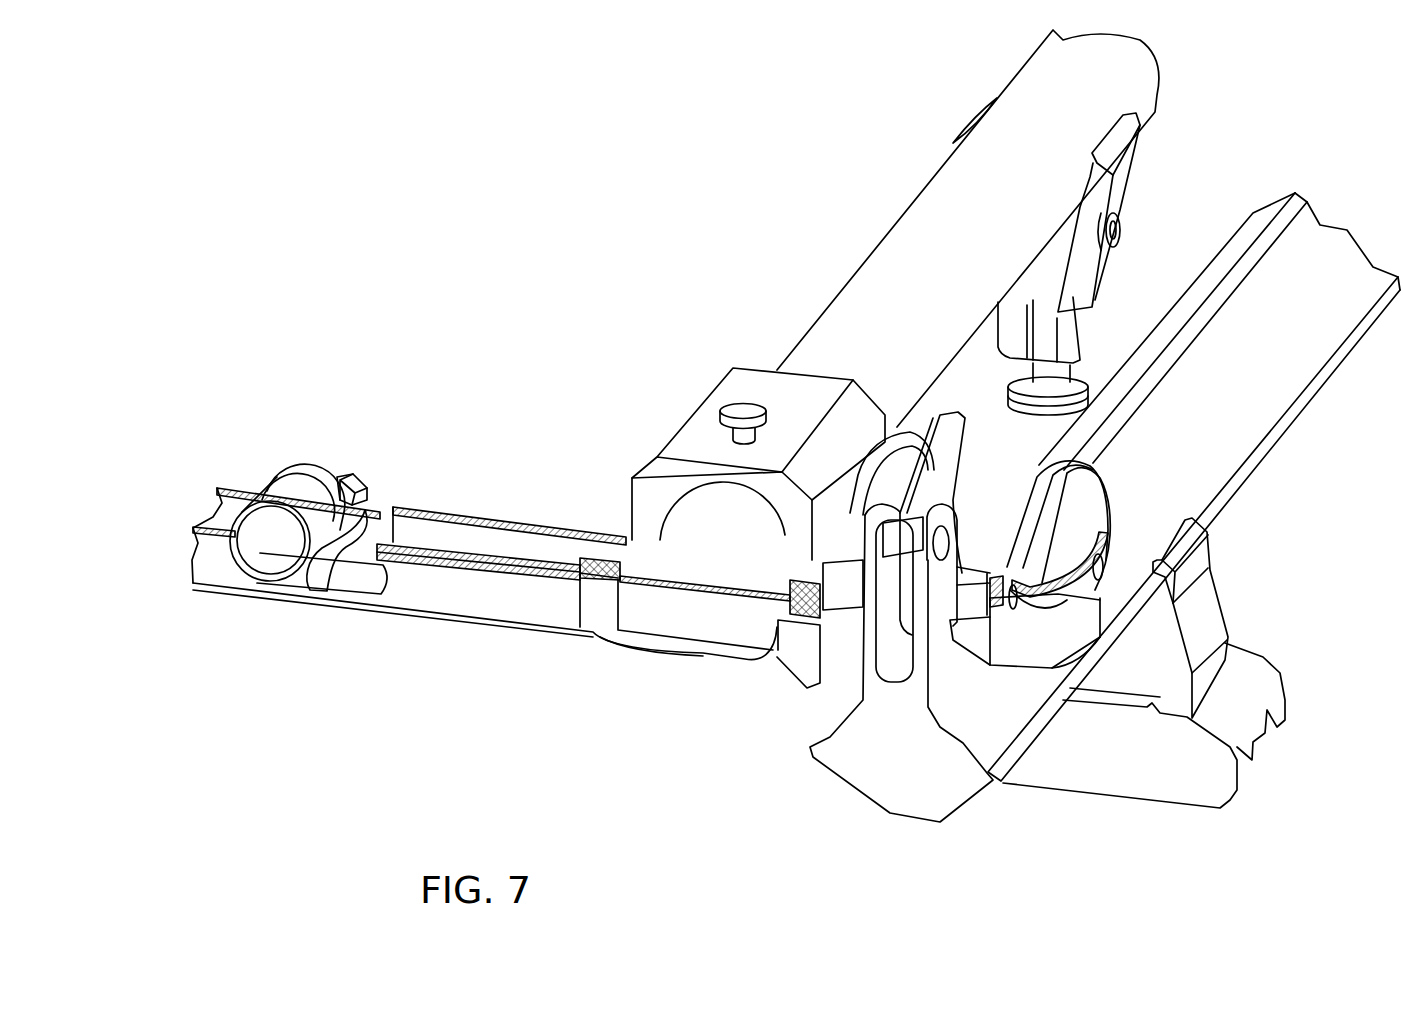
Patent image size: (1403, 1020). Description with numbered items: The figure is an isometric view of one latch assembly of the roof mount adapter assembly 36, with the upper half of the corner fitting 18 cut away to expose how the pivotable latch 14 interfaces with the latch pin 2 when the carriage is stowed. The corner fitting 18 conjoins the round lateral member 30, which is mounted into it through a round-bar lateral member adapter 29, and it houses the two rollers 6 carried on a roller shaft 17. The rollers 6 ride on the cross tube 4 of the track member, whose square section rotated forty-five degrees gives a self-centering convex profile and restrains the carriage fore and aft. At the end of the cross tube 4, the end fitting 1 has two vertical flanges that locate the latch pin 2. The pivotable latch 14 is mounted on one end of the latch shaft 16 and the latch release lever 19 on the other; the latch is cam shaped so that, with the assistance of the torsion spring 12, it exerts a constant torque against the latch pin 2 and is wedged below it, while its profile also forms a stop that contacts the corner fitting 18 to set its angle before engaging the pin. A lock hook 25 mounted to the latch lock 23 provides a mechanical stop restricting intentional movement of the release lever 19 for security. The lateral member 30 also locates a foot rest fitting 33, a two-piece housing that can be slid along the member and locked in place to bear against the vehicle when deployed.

The end fitting 1 is at (886, 773).
The latch pin 2 is at (898, 542).
The cross tube 4 is at (1313, 250).
The roller 6 is at (1094, 498).
The torsion spring 12 is at (965, 595).
The pivotable latch 14 is at (962, 440).
The latch shaft 16 is at (523, 540).
The roller shaft 17 is at (497, 597).
The corner fitting 18 is at (697, 656).
The latch release lever 19 is at (320, 580).
The latch lock 23 is at (248, 548).
The lock hook 25 is at (337, 475).
The lateral member adapter 29 is at (737, 388).
The lateral member 30 is at (917, 222).
The foot rest fitting 33 is at (1115, 200).
The roof mount adapter assembly 36 is at (1203, 616).